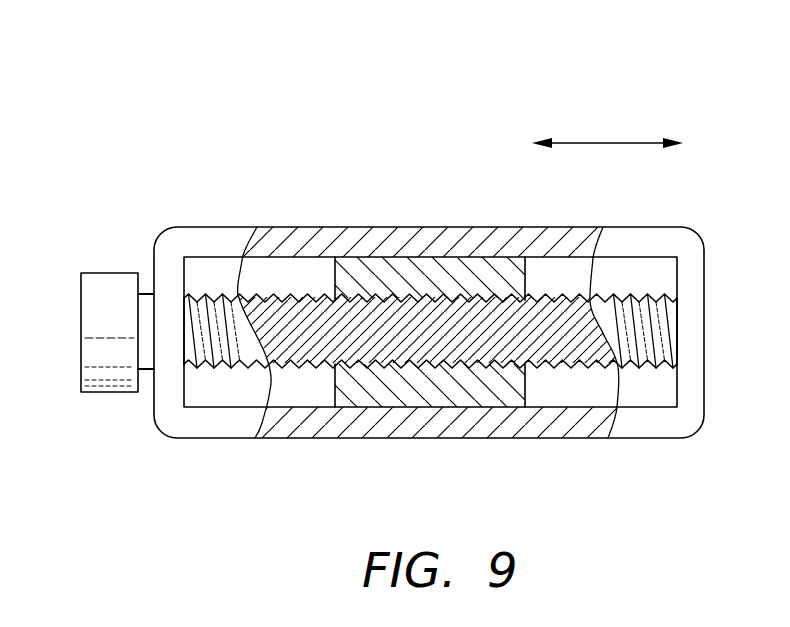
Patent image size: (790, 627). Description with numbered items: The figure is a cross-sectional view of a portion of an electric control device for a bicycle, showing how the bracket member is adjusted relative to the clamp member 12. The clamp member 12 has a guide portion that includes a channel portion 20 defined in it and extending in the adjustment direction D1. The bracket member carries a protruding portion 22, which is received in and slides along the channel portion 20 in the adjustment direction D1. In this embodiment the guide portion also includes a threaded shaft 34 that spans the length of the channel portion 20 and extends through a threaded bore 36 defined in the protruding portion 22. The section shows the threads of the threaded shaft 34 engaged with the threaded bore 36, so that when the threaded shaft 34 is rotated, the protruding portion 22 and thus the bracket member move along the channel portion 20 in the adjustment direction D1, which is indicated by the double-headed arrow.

The clamp member 12 is at (153, 413).
The channel portion 20 is at (213, 393).
The protruding portion 22 is at (330, 387).
The threaded shaft 34 is at (238, 295).
The threaded bore 36 is at (453, 293).
The adjustment direction D1 is at (608, 143).